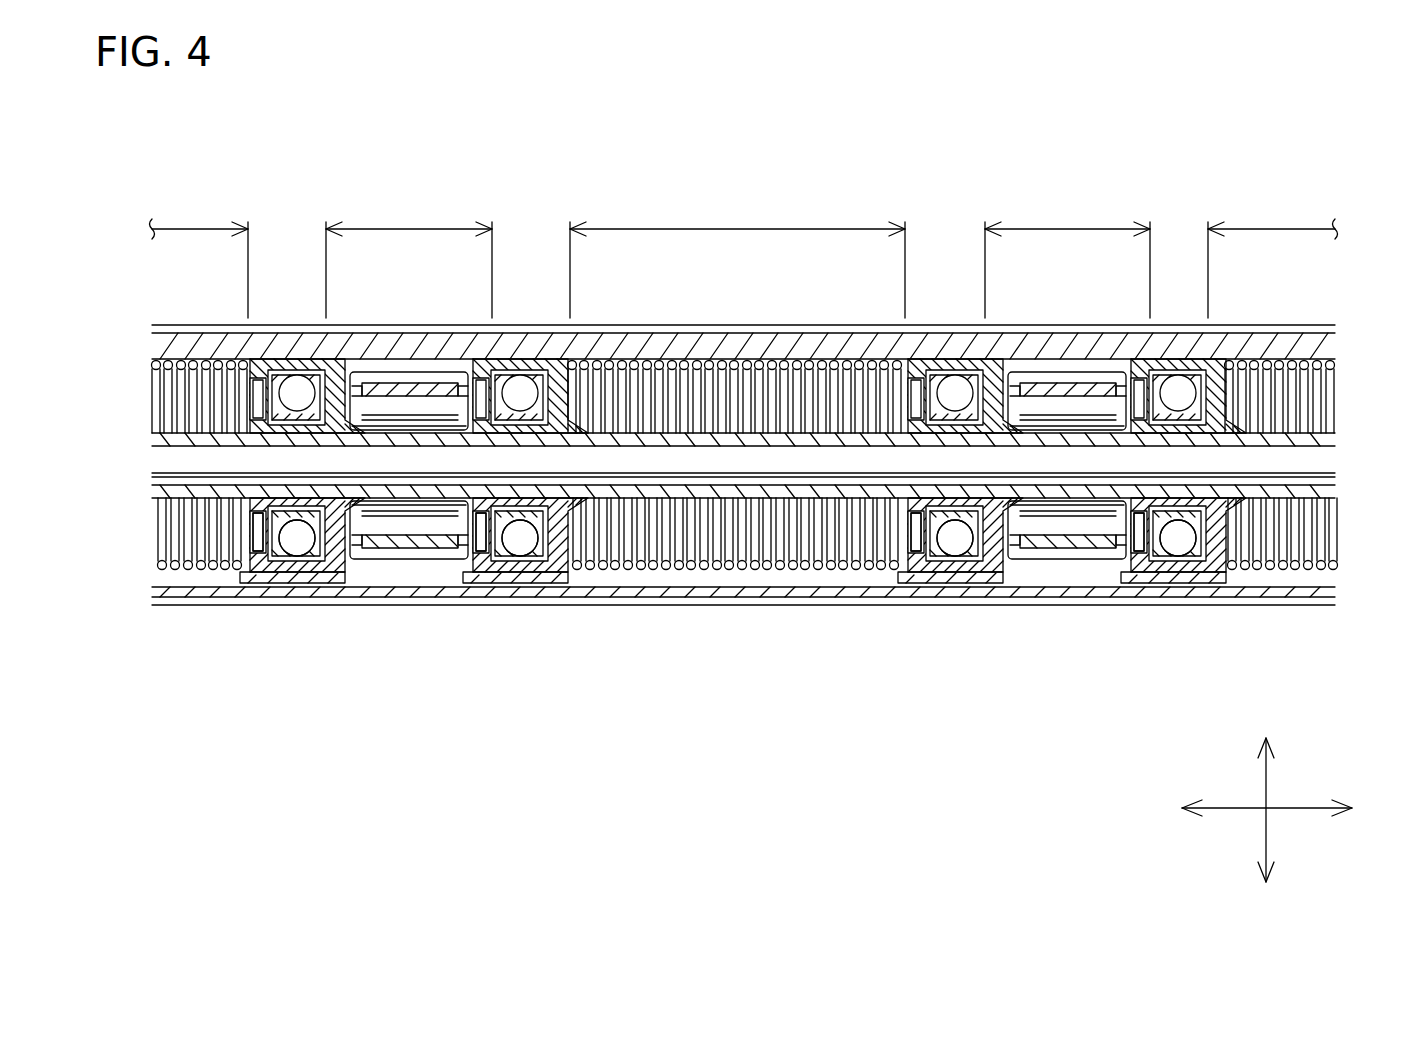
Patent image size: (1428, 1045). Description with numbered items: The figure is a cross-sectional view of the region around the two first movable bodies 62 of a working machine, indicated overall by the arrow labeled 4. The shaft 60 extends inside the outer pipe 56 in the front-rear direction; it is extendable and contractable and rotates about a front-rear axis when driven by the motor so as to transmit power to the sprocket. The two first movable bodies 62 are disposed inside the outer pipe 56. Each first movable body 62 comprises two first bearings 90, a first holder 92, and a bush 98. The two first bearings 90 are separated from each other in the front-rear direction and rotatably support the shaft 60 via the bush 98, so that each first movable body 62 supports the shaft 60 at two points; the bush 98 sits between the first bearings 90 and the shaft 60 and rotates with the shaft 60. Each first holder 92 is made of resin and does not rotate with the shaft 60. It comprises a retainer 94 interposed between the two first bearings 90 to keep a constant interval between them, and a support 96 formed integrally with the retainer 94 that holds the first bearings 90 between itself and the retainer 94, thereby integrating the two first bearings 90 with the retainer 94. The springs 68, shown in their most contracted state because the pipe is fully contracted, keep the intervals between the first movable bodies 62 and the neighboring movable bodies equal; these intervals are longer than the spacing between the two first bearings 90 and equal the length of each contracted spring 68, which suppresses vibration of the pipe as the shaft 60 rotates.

The steering shaft support assembly 4 is at (1258, 160).
The outer pipe 56 is at (932, 345).
The shaft 60 is at (805, 490).
The first movable body 62 is at (518, 352).
The spring 68 is at (200, 567).
The first bearing 90 is at (297, 542).
The first holder 92 is at (613, 626).
The retainer 94 is at (400, 563).
The support 96 is at (340, 575).
The bush 98 is at (262, 548).